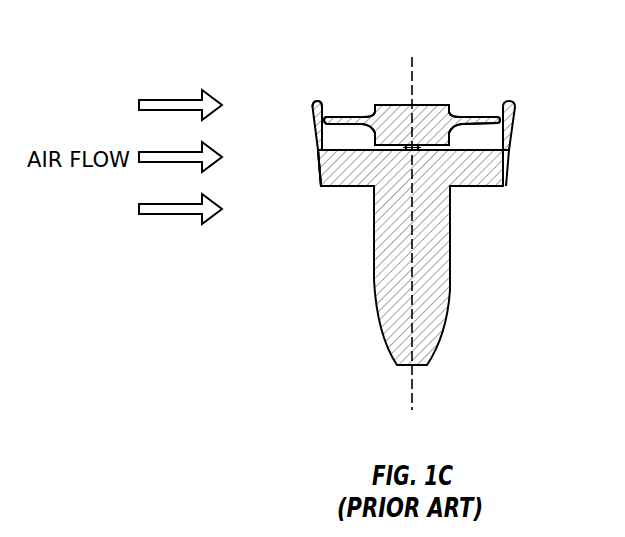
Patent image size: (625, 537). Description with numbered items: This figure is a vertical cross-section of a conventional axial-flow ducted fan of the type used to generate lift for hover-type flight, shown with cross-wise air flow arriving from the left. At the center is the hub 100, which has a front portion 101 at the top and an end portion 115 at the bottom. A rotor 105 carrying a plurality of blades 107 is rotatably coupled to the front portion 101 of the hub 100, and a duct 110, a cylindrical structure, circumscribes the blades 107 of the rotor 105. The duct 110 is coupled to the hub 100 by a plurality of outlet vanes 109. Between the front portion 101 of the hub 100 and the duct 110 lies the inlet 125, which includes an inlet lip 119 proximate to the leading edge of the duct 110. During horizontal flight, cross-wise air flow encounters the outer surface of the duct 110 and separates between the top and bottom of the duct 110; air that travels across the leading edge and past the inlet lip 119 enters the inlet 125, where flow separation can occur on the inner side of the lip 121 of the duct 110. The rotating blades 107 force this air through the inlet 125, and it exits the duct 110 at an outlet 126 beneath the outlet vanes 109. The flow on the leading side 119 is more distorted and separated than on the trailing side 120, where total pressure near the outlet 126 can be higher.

The hub 100 is at (437, 231).
The front portion 101 is at (398, 150).
The rotor 105 is at (427, 115).
The blades 107 is at (474, 116).
The outlet vanes 109 is at (333, 182).
The duct 110 is at (316, 134).
The end portion 115 is at (431, 352).
The inlet lip 119 is at (311, 112).
The trailing side 120 is at (318, 164).
The lip 121 is at (318, 99).
The inlet 125 is at (346, 92).
The outlet 126 is at (346, 194).